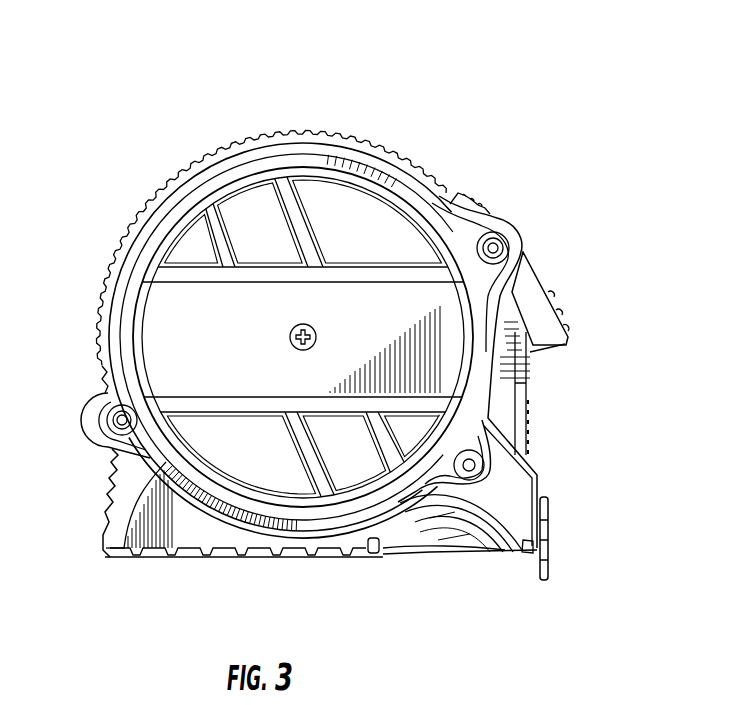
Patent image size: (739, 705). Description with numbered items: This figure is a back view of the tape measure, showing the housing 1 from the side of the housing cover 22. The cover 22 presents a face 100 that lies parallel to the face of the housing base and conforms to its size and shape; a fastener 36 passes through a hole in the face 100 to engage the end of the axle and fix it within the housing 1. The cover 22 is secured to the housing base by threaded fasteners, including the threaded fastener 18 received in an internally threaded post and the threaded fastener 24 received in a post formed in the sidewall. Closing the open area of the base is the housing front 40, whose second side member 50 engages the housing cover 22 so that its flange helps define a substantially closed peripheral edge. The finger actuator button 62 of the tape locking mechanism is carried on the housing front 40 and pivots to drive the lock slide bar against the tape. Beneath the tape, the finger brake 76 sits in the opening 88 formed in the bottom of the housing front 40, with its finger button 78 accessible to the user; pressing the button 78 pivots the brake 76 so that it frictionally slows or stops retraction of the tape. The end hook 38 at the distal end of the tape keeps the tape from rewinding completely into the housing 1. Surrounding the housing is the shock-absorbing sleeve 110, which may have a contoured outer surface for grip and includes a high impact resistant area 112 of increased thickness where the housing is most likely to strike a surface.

The housing 1 is at (329, 88).
The housing cover 22 is at (258, 168).
The face 100 is at (355, 212).
The threaded fastener 24 is at (493, 245).
The finger actuator button 62 is at (547, 280).
The fastener 36 is at (317, 335).
The threaded fastener 18 is at (105, 412).
The housing front 40 is at (545, 450).
The end hook 38 is at (549, 533).
The second side member 50 is at (518, 548).
The finger brake 76 is at (430, 556).
The finger button 78 is at (402, 554).
The opening 88 is at (371, 556).
The shock-absorbing sleeve 110 is at (157, 535).
The high impact resistant area 112 is at (107, 557).